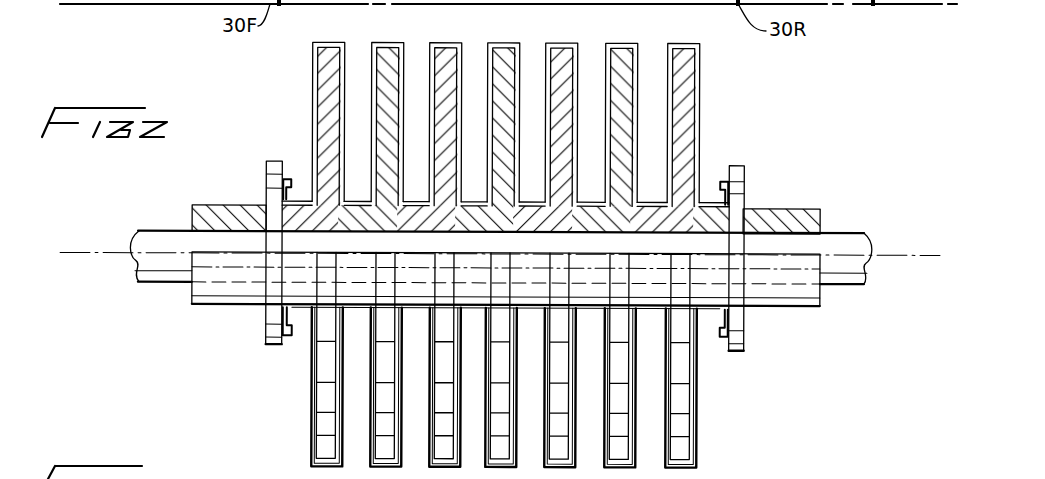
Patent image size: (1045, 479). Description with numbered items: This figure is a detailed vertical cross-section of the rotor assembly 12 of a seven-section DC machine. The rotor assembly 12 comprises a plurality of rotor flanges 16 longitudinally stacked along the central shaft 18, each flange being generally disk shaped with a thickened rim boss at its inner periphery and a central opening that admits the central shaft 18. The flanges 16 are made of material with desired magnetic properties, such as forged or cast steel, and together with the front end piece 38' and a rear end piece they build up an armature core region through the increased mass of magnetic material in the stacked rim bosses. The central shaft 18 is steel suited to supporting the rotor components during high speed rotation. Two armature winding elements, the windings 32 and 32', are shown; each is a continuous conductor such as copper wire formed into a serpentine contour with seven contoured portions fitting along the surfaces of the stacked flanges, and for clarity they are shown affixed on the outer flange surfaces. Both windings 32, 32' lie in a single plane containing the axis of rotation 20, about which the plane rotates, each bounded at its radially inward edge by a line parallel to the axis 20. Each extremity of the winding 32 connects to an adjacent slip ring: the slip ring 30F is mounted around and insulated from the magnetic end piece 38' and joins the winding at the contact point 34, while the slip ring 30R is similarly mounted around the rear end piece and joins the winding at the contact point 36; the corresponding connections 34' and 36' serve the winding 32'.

The rotor assembly 12 is at (260, 172).
The rotor flanges 16 is at (325, 52).
The central shaft 18 is at (850, 231).
The axis of rotation 20 is at (113, 254).
The slip ring 30F is at (277, 350).
The slip ring 30R is at (742, 354).
The winding 32 is at (510, 124).
The winding 32' is at (524, 387).
The contact point 34 is at (280, 156).
The front retaining clip (lower) 34' is at (275, 360).
The contact point 36 is at (744, 170).
The rear retaining clip (lower) 36' is at (723, 349).
The front end piece 38' is at (229, 206).